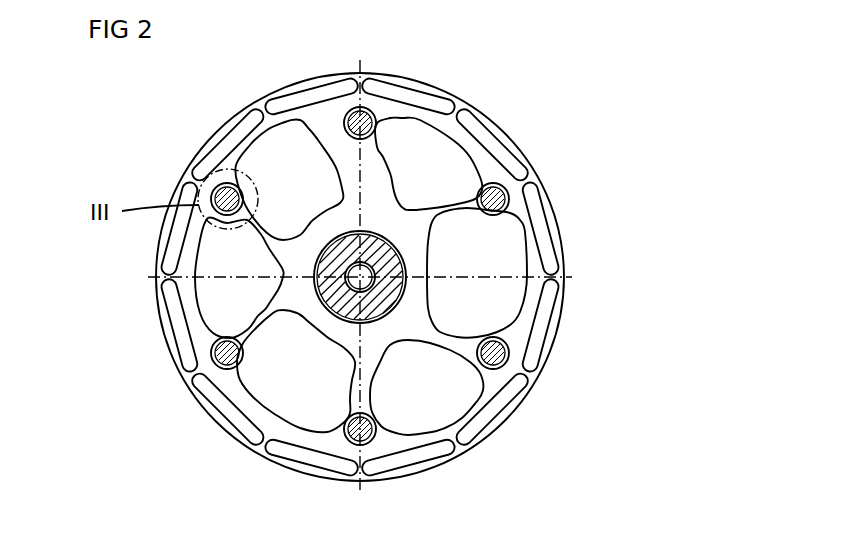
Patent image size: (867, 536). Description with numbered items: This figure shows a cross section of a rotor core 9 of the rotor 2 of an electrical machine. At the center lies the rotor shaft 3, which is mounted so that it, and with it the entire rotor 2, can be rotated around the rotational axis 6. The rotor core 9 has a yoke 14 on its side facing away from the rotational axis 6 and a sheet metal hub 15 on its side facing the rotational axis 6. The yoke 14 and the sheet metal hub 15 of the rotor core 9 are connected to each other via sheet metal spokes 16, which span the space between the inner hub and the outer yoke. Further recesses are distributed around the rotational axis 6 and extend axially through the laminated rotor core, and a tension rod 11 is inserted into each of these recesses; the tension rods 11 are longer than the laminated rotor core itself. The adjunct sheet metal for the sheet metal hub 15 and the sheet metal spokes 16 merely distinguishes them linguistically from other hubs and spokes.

The rotor 2 is at (566, 91).
The rotor shaft 3 is at (343, 230).
The rotational axis 6 is at (362, 279).
The rotor core 9 is at (288, 124).
The tension rod 11 is at (357, 119).
The yoke 14 is at (263, 440).
The sheet metal hub 15 is at (417, 257).
The sheet metal spoke 16 is at (386, 150).